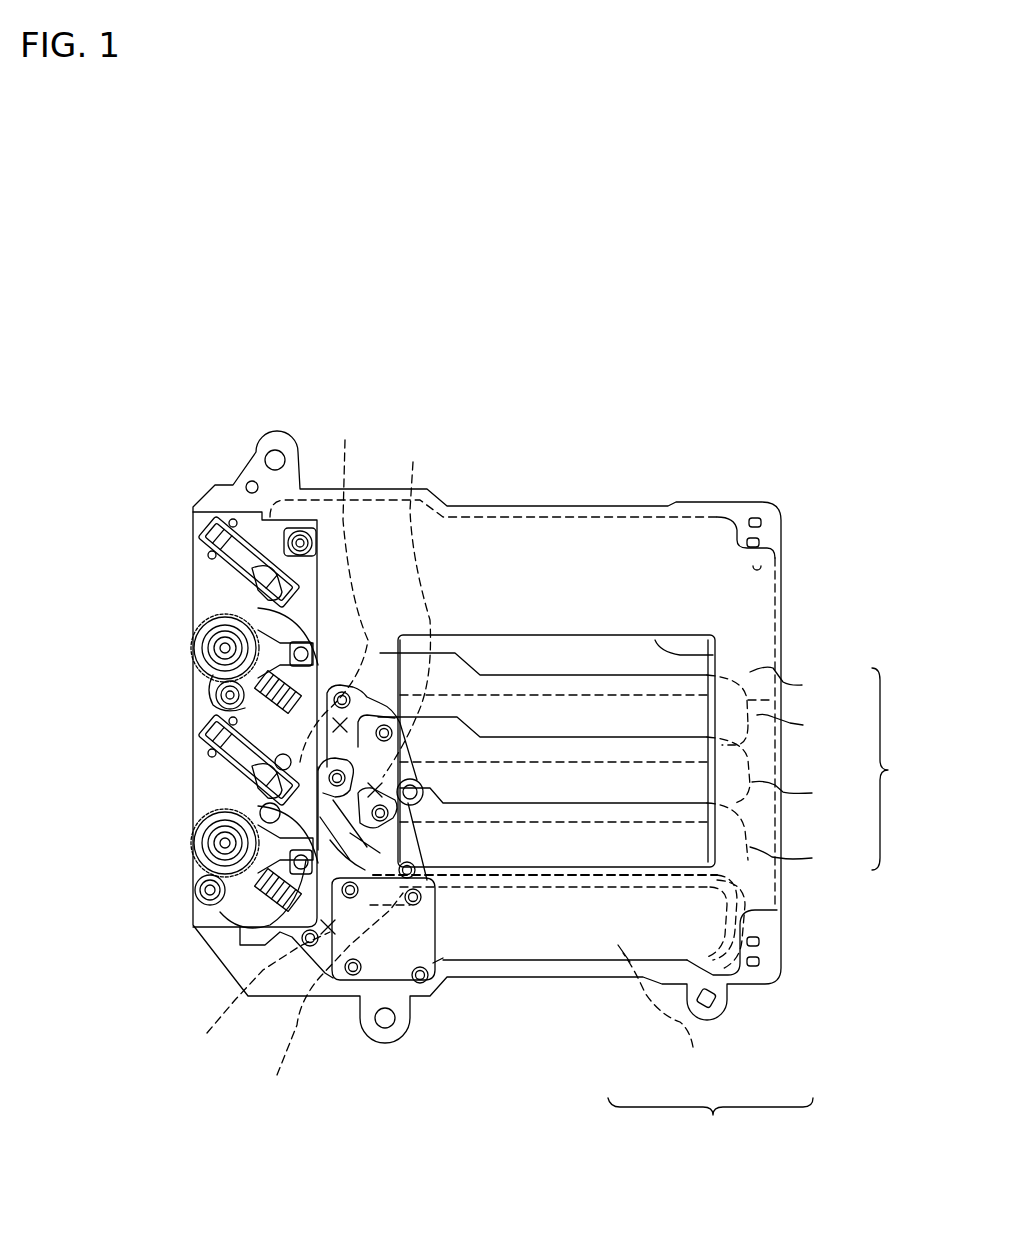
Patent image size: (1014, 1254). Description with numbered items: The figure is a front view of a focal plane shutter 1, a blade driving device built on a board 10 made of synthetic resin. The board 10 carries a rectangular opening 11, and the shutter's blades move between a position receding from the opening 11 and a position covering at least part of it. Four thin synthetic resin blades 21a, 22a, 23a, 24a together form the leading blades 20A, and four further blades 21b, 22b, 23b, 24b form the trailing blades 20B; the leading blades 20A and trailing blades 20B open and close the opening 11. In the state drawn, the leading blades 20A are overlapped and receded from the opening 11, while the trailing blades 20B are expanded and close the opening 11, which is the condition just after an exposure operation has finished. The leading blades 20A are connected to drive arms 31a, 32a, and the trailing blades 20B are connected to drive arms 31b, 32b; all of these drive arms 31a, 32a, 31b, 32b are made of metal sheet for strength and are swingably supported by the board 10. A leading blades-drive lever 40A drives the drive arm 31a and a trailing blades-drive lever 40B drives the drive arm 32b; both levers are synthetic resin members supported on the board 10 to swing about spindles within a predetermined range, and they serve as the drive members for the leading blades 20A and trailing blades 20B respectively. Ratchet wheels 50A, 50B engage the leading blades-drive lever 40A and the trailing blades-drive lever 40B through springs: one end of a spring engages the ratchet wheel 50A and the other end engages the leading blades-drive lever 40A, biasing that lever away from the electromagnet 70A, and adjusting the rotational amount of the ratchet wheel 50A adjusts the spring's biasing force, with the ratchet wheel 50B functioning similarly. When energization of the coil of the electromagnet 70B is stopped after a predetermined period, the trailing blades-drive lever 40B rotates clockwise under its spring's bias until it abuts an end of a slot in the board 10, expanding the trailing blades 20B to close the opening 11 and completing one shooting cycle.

The focal plane shutter 1 is at (767, 420).
The board 10 is at (800, 977).
The opening 11 is at (713, 655).
The leading blades 20A is at (710, 1045).
The trailing blades 20B is at (901, 769).
The blade 21a is at (545, 983).
The blade 22a is at (556, 939).
The blade 23a is at (573, 904).
The blade 24a is at (600, 863).
The blade 21b is at (805, 858).
The blade 22b is at (805, 792).
The blade 23b is at (805, 725).
The blade 24b is at (805, 684).
The drive arm 31a is at (325, 1000).
The drive arm 31b is at (414, 603).
The drive arm 32a is at (245, 996).
The drive arm 32b is at (339, 585).
The leading blades-drive lever 40A is at (232, 910).
The trailing blades-drive lever 40B is at (190, 698).
The ratchet wheel 50A is at (173, 846).
The ratchet wheel 50B is at (173, 647).
The electromagnet 70A is at (186, 750).
The electromagnet 70B is at (195, 579).